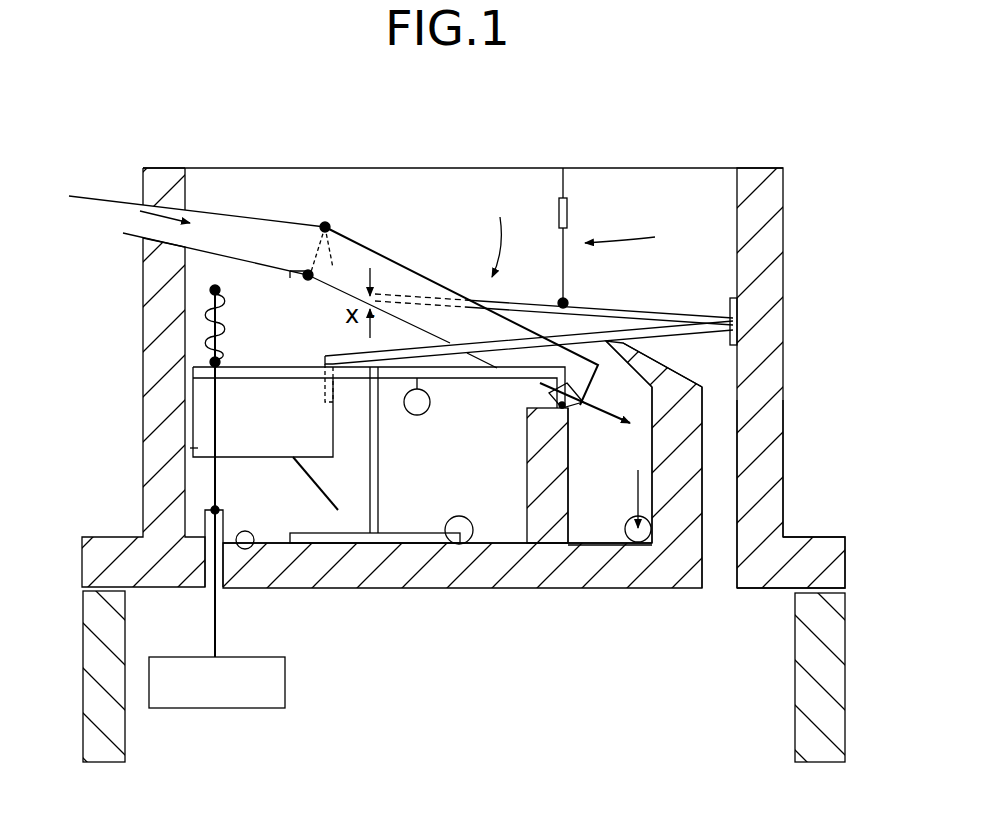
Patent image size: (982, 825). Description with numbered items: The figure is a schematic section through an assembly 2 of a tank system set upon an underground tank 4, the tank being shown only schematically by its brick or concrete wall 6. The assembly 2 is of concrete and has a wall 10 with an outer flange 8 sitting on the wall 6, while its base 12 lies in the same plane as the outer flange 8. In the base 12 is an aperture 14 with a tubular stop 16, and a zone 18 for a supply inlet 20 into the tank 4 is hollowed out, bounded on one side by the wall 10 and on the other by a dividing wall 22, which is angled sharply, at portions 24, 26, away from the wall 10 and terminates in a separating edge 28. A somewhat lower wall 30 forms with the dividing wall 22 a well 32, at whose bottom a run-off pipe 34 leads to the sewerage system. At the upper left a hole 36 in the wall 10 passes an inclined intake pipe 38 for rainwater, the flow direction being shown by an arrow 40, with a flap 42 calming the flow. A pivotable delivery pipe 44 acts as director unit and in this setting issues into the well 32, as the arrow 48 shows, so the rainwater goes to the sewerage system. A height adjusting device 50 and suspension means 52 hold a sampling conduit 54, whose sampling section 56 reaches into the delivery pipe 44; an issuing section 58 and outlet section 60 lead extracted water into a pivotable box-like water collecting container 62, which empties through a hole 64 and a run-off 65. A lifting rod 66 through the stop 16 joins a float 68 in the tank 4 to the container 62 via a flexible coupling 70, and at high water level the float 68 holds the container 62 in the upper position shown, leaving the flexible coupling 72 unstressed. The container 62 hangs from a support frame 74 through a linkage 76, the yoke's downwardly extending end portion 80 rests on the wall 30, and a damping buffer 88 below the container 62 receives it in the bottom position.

The assembly 2 is at (598, 123).
The tank 4 is at (524, 726).
The wall 6 is at (837, 632).
The outer flange 8 is at (833, 560).
The wall 10 is at (770, 317).
The base 12 is at (497, 552).
The aperture 14 is at (217, 578).
The stop 16 is at (217, 510).
The zone 18 is at (706, 575).
The supply inlet 20 is at (745, 450).
The dividing wall 22 is at (693, 500).
The angled portion 24 is at (675, 367).
The angled portion 26 is at (643, 347).
The separating edge 28 is at (603, 333).
The wall 30 is at (527, 448).
The well 32 is at (602, 523).
The run-off pipe 34 is at (638, 470).
The hole 36 is at (173, 168).
The intake pipe 38 is at (140, 240).
The arrow 40 is at (97, 197).
The flap 42 is at (330, 257).
The delivery pipe 44 is at (388, 263).
The arrow 48 is at (600, 425).
The height adjusting device 50 is at (570, 210).
The suspension means 52 is at (635, 227).
The sampling conduit 54 is at (503, 230).
The sampling section 56 is at (530, 303).
The issuing section 58 is at (365, 355).
The outlet section 60 is at (323, 362).
The water collecting container 62 is at (317, 478).
The hole 64 is at (195, 447).
The run-off 65 is at (443, 522).
The lifting rod 66 is at (217, 627).
The float 68 is at (286, 688).
The flexible coupling 70 is at (516, 383).
The flexible coupling 72 is at (221, 303).
The support frame 74 is at (380, 520).
The linkage 76 is at (378, 407).
The end portion 80 is at (583, 395).
The damping buffer 88 is at (252, 535).